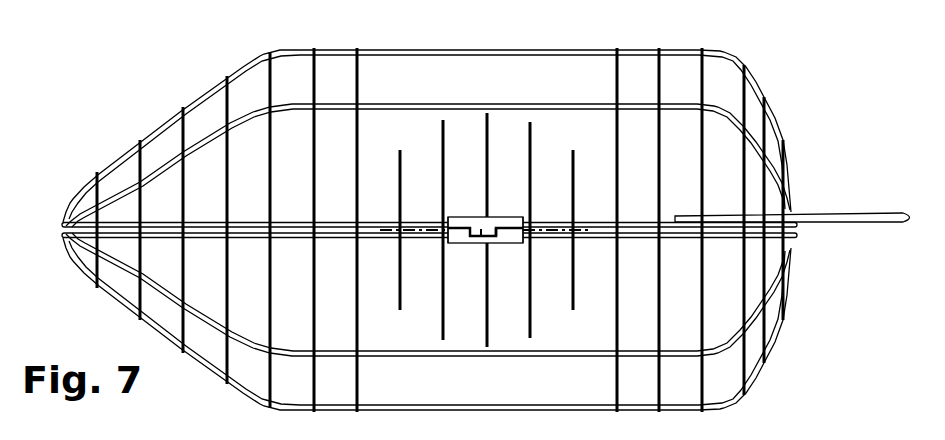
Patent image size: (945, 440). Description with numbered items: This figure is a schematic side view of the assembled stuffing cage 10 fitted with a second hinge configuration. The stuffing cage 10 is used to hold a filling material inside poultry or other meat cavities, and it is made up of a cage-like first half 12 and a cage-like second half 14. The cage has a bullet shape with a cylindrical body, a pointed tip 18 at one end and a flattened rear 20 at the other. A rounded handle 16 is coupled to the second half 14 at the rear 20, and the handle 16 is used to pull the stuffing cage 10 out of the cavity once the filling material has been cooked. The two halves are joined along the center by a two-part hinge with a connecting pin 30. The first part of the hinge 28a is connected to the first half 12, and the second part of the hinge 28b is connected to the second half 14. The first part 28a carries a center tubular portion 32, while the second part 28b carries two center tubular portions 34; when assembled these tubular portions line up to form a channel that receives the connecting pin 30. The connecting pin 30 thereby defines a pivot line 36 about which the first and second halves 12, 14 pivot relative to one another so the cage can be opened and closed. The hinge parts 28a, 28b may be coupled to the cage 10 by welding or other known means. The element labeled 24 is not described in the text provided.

The stuffing cage 10 is at (798, 114).
The first half 12 is at (556, 72).
The second half 14 is at (720, 386).
The handle 16 is at (848, 213).
The tip 18 is at (68, 247).
The rear 20 is at (787, 283).
The connector 24 is at (497, 200).
The first part of the hinge 28a is at (475, 218).
The second part of the hinge 28b is at (516, 243).
The connecting pin 30 is at (523, 235).
The center tubular portion 32 is at (481, 243).
The center tubular portions 34 is at (512, 217).
The pivot line 36 is at (569, 238).